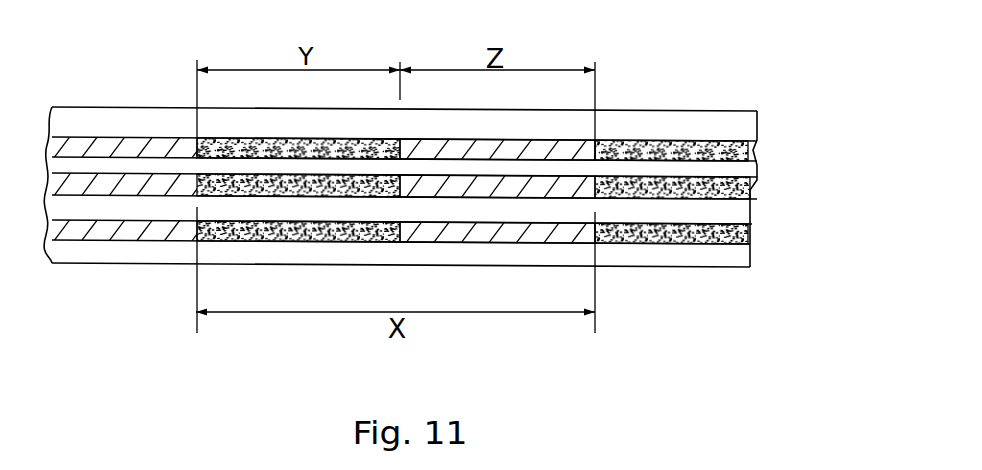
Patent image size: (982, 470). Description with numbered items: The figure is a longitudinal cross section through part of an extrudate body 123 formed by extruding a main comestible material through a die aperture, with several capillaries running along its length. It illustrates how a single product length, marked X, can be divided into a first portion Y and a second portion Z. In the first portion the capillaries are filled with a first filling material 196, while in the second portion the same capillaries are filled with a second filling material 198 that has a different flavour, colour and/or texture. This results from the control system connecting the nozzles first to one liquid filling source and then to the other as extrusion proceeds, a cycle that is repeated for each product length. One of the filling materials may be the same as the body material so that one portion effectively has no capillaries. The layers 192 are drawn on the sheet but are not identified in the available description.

The laminated strip 123 is at (697, 125).
The first adhesive coated region 196 is at (222, 148).
The uncoated hatched region 198 is at (563, 152).
The layers of the laminate 192 is at (738, 161).